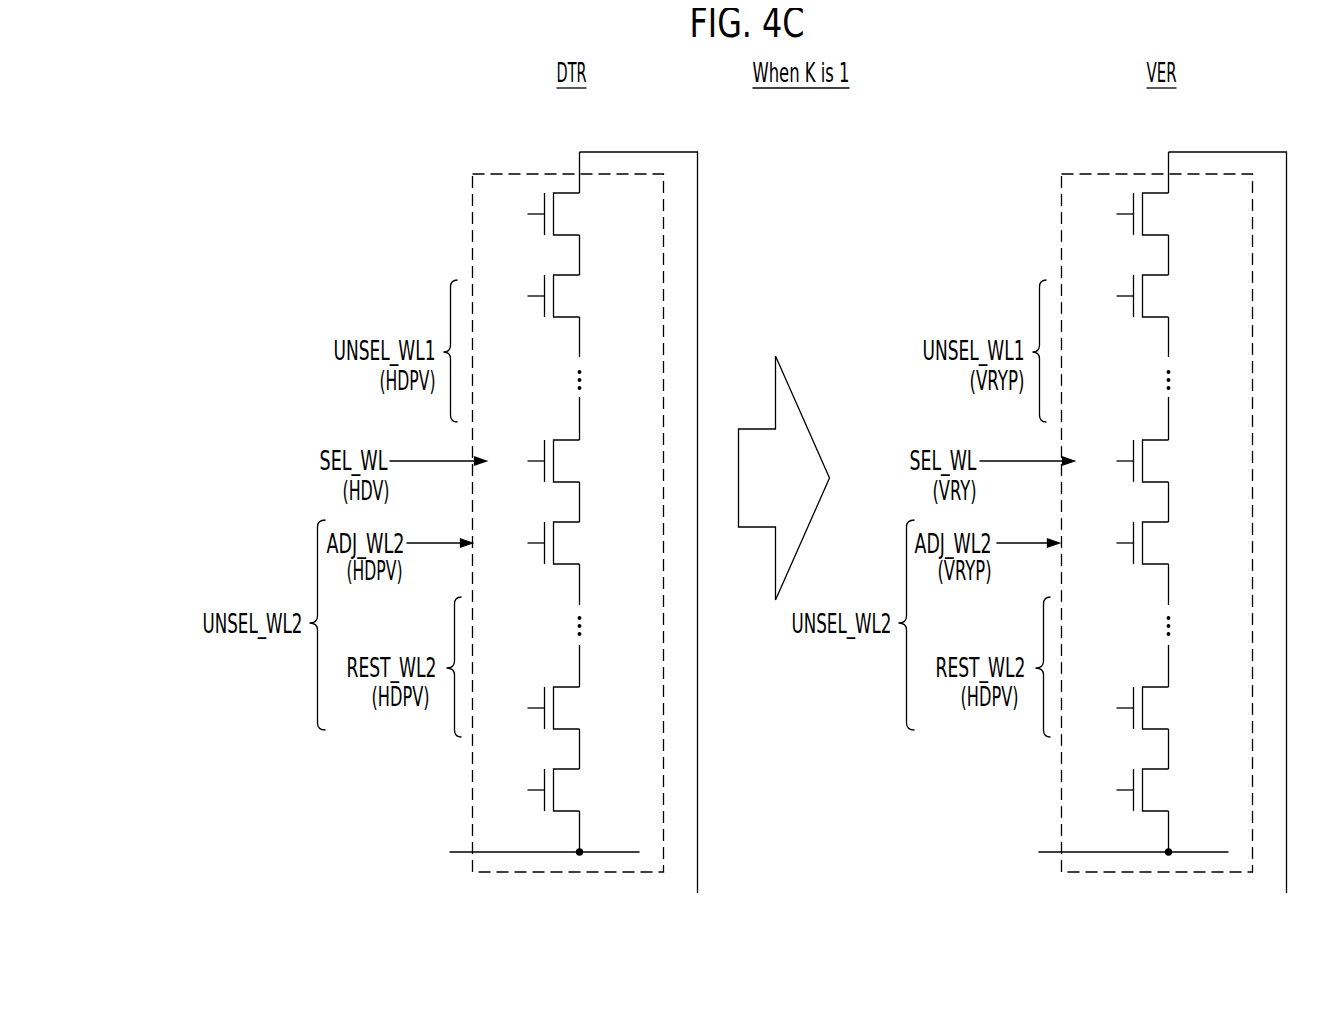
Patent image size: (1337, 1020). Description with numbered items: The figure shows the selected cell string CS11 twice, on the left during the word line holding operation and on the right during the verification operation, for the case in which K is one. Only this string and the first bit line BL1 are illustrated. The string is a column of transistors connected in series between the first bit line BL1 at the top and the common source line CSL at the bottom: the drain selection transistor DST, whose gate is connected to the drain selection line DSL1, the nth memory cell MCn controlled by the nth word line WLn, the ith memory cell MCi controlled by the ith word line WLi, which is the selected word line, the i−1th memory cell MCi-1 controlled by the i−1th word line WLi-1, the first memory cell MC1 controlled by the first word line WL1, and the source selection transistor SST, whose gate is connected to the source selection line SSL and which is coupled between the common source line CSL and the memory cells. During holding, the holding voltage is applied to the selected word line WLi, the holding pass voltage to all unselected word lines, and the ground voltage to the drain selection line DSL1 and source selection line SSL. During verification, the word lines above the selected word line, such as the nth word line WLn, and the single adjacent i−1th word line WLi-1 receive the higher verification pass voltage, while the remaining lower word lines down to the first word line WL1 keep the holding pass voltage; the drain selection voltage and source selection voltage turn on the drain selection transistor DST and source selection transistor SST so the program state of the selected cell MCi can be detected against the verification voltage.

The selected cell string CS11 is at (503, 174).
The first bit line BL1 is at (940, 540).
The common source line CSL is at (822, 852).
The drain selection transistor DST is at (873, 214).
The drain selection line DSL1 is at (808, 228).
The nth memory cell MCn is at (874, 296).
The nth word line WLn is at (810, 296).
The ith memory cell MCi is at (873, 461).
The ith word line WLi is at (813, 461).
The i−1th memory cell MCi-1 is at (879, 543).
The i−1th word line WLi-1 is at (806, 543).
The first memory cell MC1 is at (873, 708).
The first word line WL1 is at (811, 708).
The source selection transistor SST is at (873, 790).
The source selection line SSL is at (808, 804).